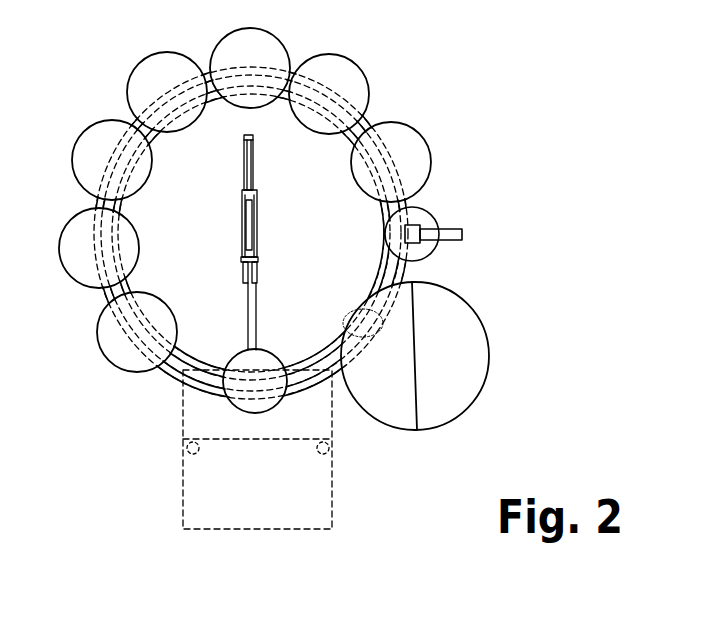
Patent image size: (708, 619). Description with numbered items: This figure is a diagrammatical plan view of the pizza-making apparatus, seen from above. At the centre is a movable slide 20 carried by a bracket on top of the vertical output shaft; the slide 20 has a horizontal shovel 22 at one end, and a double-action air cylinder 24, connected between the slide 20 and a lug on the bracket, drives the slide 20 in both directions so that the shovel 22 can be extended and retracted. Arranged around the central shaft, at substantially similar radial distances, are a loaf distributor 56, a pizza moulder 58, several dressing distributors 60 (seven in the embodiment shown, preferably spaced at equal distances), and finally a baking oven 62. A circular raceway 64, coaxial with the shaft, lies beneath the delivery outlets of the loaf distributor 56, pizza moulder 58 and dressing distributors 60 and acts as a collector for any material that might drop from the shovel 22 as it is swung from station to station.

The movable slide 20 is at (265, 242).
The horizontal shovel 22 is at (262, 366).
The double-action air cylinder 24 is at (254, 207).
The loaf distributor 56 is at (473, 356).
The pizza moulder 58 is at (427, 218).
The dressing distributors 60 is at (77, 237).
The baking oven 62 is at (323, 513).
The circular raceway 64 is at (170, 367).